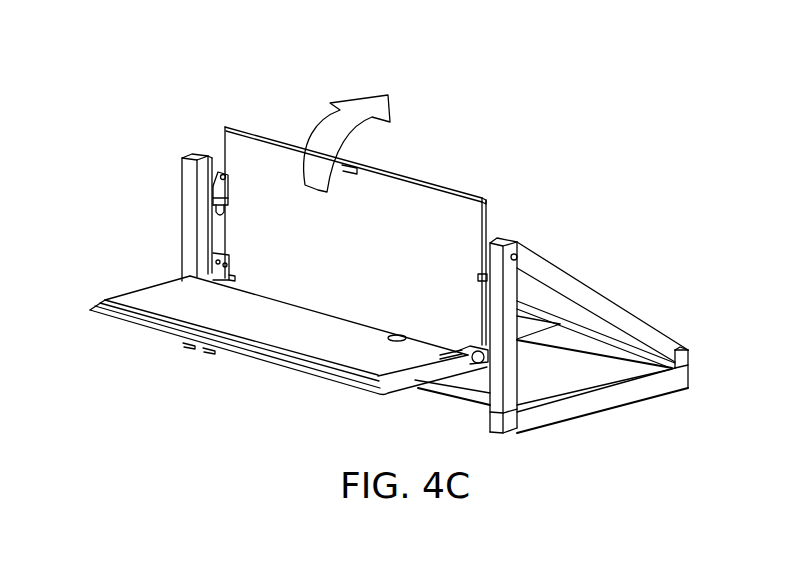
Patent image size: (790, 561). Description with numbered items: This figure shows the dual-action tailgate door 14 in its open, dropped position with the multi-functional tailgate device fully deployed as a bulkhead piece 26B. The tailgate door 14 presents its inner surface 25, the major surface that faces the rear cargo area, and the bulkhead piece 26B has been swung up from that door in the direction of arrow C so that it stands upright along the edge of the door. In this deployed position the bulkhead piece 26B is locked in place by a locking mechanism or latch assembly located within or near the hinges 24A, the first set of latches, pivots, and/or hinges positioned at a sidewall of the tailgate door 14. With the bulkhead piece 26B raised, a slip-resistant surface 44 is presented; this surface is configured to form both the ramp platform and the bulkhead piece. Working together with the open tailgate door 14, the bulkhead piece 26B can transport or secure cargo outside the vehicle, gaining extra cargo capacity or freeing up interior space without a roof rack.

The tailgate door 14 is at (152, 340).
The hinges 24A is at (243, 201).
The inner surface 25 is at (185, 303).
The bulkhead piece 26B is at (343, 245).
The slip-resistant surface 44 is at (463, 219).
The arrow C is at (392, 107).